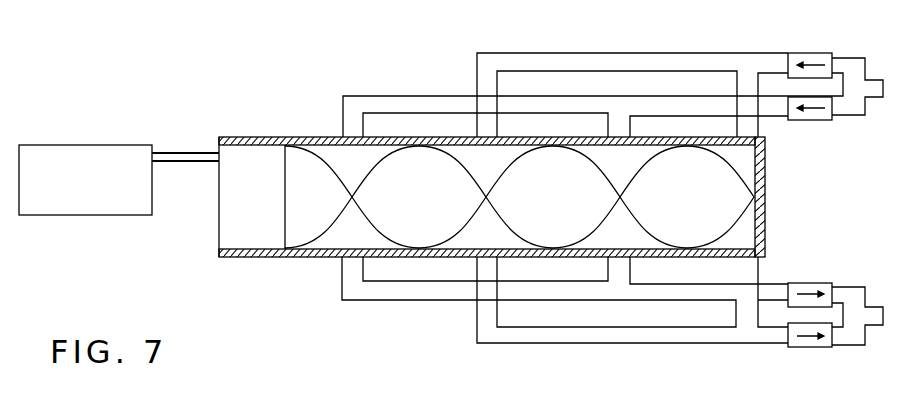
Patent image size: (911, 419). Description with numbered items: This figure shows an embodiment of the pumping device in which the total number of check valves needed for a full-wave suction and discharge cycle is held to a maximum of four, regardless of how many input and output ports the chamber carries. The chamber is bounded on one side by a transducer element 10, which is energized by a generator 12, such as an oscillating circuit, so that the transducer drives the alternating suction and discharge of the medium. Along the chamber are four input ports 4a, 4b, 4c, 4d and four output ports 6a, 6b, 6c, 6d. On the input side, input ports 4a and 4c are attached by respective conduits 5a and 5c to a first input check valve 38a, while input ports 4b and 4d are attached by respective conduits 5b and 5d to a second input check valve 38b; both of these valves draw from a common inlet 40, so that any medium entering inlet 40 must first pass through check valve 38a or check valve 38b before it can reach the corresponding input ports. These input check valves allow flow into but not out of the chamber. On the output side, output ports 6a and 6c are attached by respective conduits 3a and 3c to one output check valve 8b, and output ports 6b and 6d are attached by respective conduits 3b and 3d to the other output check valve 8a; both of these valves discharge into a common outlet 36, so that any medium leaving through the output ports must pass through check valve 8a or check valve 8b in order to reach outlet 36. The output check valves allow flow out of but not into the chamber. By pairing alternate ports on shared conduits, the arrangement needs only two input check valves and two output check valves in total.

The conduit 3a is at (747, 270).
The conduit 3b is at (618, 270).
The conduit 3c is at (485, 270).
The conduit 3d is at (353, 268).
The input port 4a is at (730, 162).
The input port 4b is at (597, 162).
The input port 4c is at (462, 158).
The input port 4d is at (323, 158).
The conduit 5a is at (748, 129).
The conduit 5b is at (608, 128).
The conduit 5c is at (483, 125).
The conduit 5d is at (343, 126).
The output port 6a is at (723, 237).
The output port 6b is at (590, 237).
The output port 6c is at (457, 236).
The output port 6d is at (337, 236).
The check valve 8a is at (810, 283).
The check valve 8b is at (810, 347).
The transducer element 10 is at (248, 228).
The generator 12 is at (85, 180).
The outlet 36 is at (873, 325).
The check valve 38a is at (812, 58).
The check valve 38b is at (806, 120).
The inlet 40 is at (872, 78).